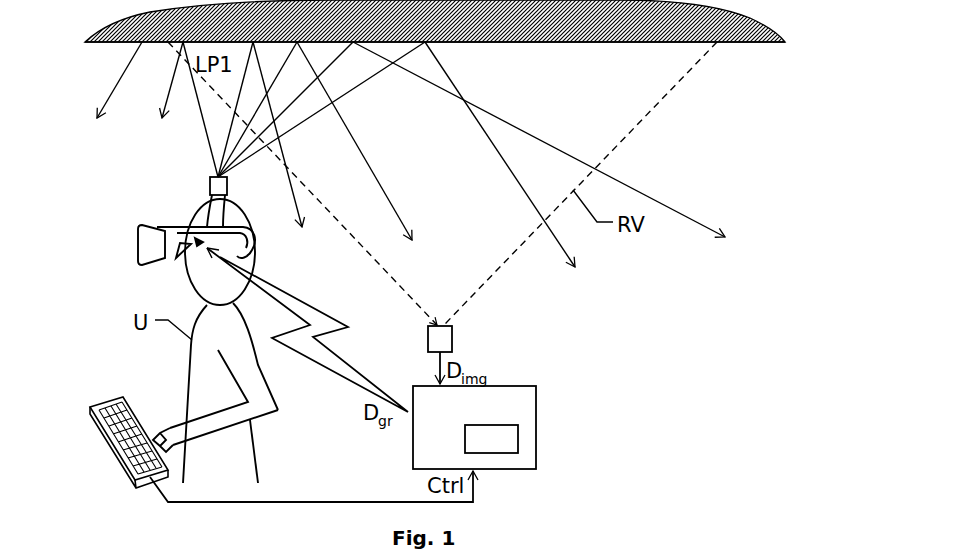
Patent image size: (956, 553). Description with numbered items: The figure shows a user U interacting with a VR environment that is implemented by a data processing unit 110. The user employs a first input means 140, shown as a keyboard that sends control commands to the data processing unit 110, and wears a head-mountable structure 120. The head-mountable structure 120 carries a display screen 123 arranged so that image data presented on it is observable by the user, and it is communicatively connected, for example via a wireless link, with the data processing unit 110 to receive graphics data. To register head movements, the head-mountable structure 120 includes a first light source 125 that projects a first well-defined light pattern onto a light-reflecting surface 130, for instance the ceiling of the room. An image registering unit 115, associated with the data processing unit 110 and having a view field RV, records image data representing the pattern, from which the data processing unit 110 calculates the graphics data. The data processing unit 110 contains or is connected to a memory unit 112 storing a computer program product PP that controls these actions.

The data processing unit 110 is at (589, 384).
The memory unit 112 is at (518, 437).
The image registering unit 115 is at (452, 335).
The head-mountable structure 120 is at (193, 227).
The display screen 123 is at (140, 240).
The first light source 125 is at (209, 179).
The light-reflecting surface 130 is at (733, 43).
The first input means 140 is at (117, 397).